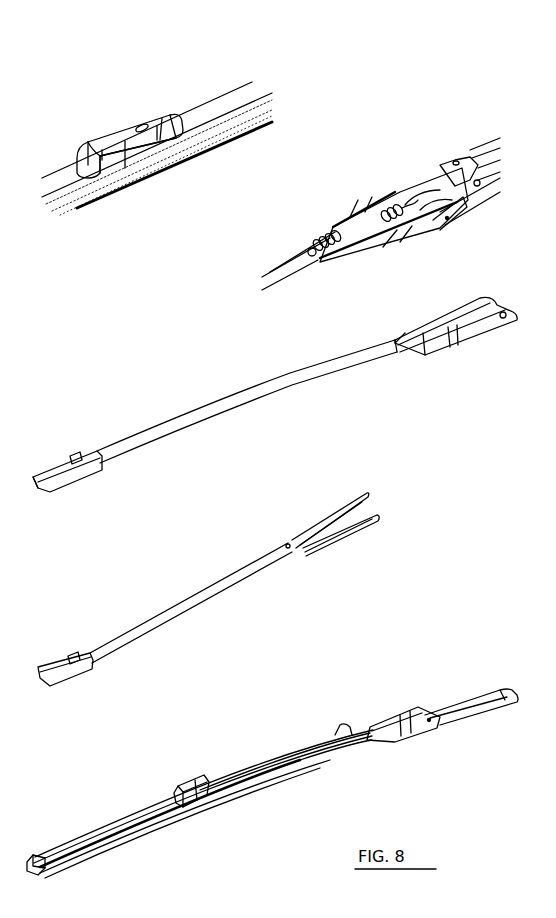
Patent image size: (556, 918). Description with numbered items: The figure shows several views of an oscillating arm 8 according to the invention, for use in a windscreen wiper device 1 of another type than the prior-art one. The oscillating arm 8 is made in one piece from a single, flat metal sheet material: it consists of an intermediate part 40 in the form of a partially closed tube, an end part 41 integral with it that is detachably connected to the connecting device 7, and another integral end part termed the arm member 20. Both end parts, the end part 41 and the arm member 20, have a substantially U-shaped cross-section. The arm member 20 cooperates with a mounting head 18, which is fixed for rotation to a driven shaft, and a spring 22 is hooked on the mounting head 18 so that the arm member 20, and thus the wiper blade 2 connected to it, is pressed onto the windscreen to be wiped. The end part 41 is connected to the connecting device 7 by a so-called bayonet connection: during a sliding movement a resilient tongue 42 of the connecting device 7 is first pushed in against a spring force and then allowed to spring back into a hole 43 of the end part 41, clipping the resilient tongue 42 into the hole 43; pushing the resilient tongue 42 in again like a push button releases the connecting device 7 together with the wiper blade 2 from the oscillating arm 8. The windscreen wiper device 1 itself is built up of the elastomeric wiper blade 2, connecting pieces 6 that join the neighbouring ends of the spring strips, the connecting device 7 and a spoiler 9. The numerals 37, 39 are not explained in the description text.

The windscreen wiper device 1 is at (200, 764).
The wiper blade 2 is at (105, 843).
The connecting pieces 6 is at (31, 857).
The connecting device 7 is at (106, 141).
The oscillating arm 8 is at (187, 385).
The spoiler 9 is at (130, 812).
The mounting head 18 is at (481, 176).
The arm member 20 is at (398, 238).
The spring 22 is at (330, 223).
The first prong 37 is at (288, 542).
The second prong 39 is at (341, 535).
The intermediate part 40 is at (278, 278).
The end part 41 is at (163, 116).
The resilient tongue 42 is at (140, 125).
The hole 43 is at (72, 456).